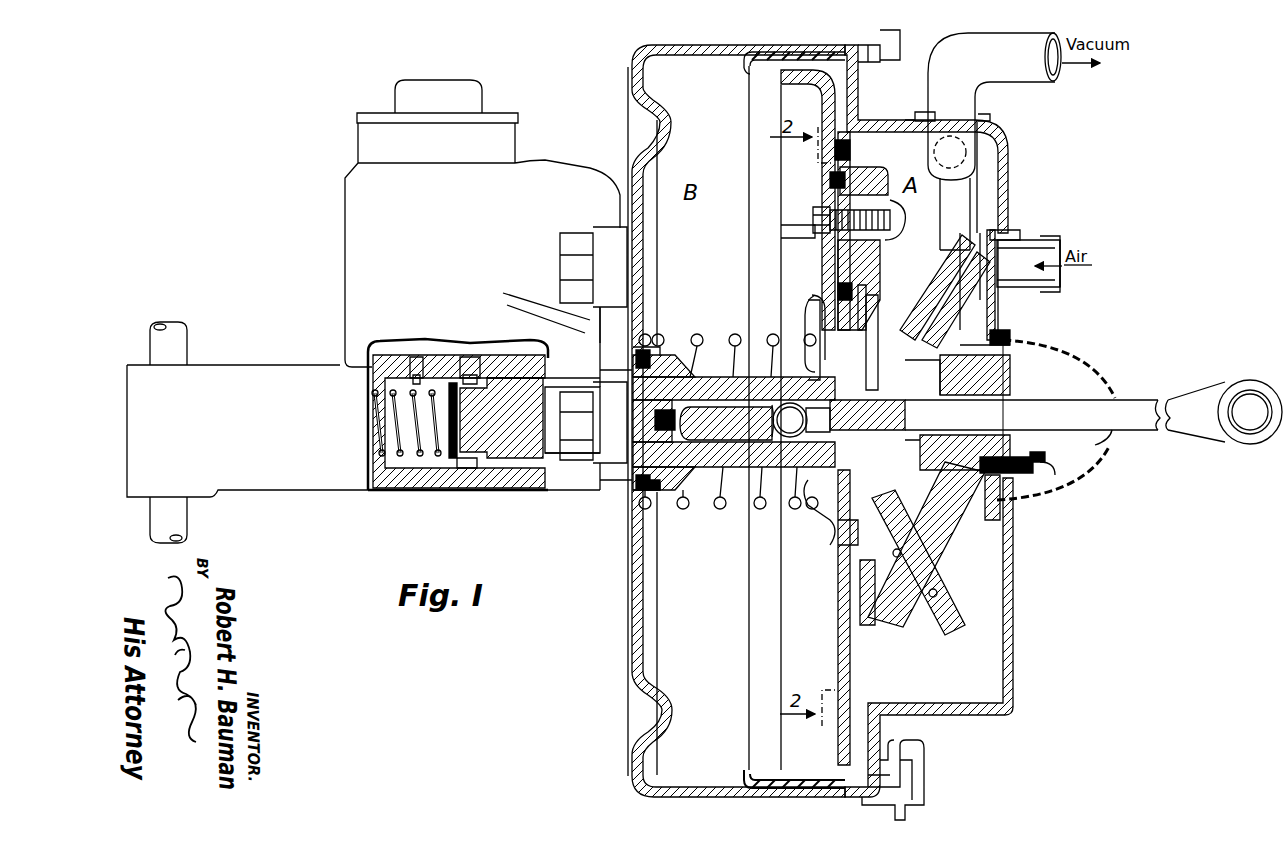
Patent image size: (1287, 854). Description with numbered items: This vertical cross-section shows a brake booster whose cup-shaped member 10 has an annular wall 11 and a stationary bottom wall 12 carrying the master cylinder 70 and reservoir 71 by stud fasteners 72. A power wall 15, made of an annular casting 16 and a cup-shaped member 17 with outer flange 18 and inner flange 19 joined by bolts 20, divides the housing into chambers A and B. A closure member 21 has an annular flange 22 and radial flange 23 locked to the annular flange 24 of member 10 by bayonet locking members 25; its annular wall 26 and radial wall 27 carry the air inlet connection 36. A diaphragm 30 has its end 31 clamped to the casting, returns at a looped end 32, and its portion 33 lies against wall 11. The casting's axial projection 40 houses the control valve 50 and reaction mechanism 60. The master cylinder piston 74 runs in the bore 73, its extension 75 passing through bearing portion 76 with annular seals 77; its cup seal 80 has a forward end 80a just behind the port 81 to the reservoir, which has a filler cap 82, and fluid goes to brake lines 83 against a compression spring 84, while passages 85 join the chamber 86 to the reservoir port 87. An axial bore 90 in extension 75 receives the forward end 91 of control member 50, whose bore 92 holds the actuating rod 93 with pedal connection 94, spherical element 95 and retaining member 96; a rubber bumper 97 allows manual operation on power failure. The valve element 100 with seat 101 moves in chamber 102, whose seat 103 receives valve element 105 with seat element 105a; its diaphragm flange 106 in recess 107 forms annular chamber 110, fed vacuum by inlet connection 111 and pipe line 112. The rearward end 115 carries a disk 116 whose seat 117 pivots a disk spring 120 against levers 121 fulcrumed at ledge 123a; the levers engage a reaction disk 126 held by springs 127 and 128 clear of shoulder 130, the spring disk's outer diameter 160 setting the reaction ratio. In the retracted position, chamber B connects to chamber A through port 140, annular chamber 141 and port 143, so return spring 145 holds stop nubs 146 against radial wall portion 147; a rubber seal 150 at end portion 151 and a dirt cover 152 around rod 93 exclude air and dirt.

The cylindrical cup-shaped member 10 is at (745, 48).
The cylindrical annular wall 11 is at (678, 58).
The stationary bottom wall 12 is at (632, 162).
The power wall 15 is at (867, 183).
The annular casting 16 is at (893, 220).
The sheet metal cup-shaped member 17 is at (833, 110).
The annular outer flange 18 is at (795, 80).
The inner annular flange 19 is at (793, 365).
The bolts 20 is at (812, 229).
The closure member 21 is at (1008, 147).
The annular flange 22 is at (930, 112).
The radial flange 23 is at (905, 45).
The annular flange 24 is at (863, 38).
The bayonet locking members 25 is at (902, 32).
The axially extending annular wall 26 is at (921, 130).
The radially extending wall 27 is at (1008, 158).
The diaphragm member 30 is at (848, 160).
The diaphragm end 31 is at (838, 177).
The looped end 32 is at (746, 66).
The diaphragm wall portion 33 is at (783, 52).
The air inlet connection 36 is at (1043, 237).
The axially extending projection 40 is at (1060, 280).
The operator operated control valve 50 is at (1005, 382).
The reaction device 60 is at (808, 302).
The master cylinder 70 is at (267, 385).
The reservoir 71 is at (345, 265).
The stud fasteners 72 is at (578, 242).
The master cylinder bore 73 is at (372, 388).
The master cylinder piston 74 is at (478, 455).
The piston end portion 75 is at (707, 378).
The bearing portion 76 is at (667, 363).
The annular seals 77 is at (617, 510).
The cup seal 80 is at (442, 465).
The forward end of cup seal 80a is at (417, 463).
The port 81 is at (417, 365).
The filler cap 82 is at (468, 100).
The brake lines 83 is at (172, 343).
The compression spring 84 is at (397, 437).
The passages 85 is at (475, 463).
The chamber 86 is at (503, 390).
The port 87 is at (470, 365).
The axial bore 90 is at (700, 500).
The forward end of control member 91 is at (753, 497).
The axial bore 92 is at (1045, 460).
The actuating rod 93 is at (1110, 425).
The connection 94 is at (1249, 397).
The spherical element 95 is at (775, 497).
The retaining member 96 is at (777, 380).
The rubber bumper 97 is at (648, 424).
The valve element 100 is at (1005, 347).
The annular valve seat 101 is at (1045, 250).
The chamber 102 is at (1010, 327).
The valve seat 103 is at (1000, 240).
The valve element 105 is at (917, 487).
The seat element 105a is at (923, 497).
The diaphragm supporting flange 106 is at (977, 233).
The recess 107 is at (973, 242).
The annular chamber 110 is at (900, 503).
The inlet connection 111 is at (927, 353).
The flexible pipe line 112 is at (945, 212).
The rearward end portion 115 is at (790, 500).
The radial disk member 116 is at (820, 510).
The annular seat 117 is at (860, 533).
The flat disk spring member 120 is at (847, 543).
The levers 121 is at (840, 283).
The ledge portion 123a is at (862, 292).
The reaction disk member 126 is at (897, 557).
The compression spring 127 is at (930, 437).
The second compression spring 128 is at (857, 383).
The shoulder 130 is at (887, 372).
The port 140 is at (1003, 200).
The annular chamber 141 is at (877, 607).
The port 143 is at (935, 597).
The return spring 145 is at (685, 500).
The resilient stop nubs 146 is at (853, 713).
The radial wall portion 147 is at (889, 774).
The rubber seal member 150 is at (1030, 475).
The end portion 151 is at (1053, 462).
The rubber dirt cover member 152 is at (1097, 452).
The outer peripheral diameter 160 is at (833, 293).